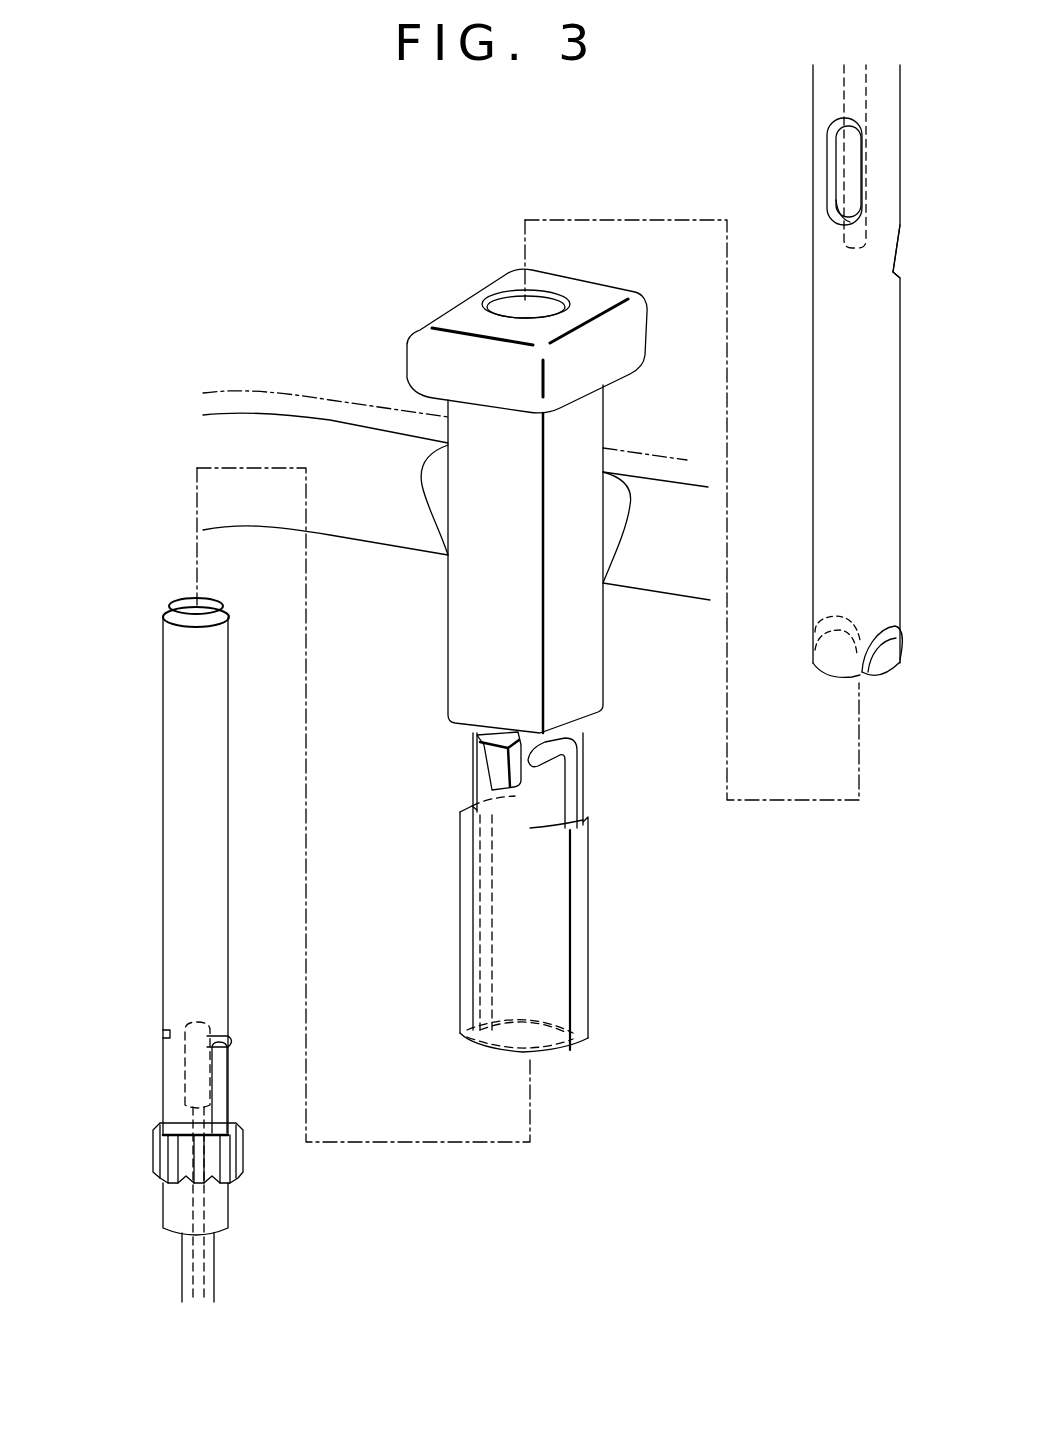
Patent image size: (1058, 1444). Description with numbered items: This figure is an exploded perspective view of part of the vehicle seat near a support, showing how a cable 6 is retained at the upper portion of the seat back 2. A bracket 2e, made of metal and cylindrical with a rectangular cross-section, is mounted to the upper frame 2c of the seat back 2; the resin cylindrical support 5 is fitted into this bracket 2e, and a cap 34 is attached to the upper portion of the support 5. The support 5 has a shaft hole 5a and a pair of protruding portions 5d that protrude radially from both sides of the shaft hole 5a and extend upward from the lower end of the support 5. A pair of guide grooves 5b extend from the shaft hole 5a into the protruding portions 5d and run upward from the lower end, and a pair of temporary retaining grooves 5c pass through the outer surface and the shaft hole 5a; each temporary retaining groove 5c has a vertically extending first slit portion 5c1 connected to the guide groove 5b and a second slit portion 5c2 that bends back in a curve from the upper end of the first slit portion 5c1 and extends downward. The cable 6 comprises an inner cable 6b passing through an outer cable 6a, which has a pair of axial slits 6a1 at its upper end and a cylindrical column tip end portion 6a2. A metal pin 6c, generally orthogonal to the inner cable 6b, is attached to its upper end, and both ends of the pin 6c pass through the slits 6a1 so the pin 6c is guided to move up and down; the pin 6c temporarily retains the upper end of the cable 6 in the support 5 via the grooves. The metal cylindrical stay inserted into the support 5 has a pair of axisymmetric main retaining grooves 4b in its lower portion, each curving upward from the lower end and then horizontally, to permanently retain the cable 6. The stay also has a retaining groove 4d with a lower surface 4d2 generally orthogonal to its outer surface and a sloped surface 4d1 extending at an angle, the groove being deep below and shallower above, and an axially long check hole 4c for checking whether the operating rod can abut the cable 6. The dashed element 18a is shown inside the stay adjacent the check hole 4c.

The seat back 2 is at (264, 376).
The upper frame 2c is at (667, 580).
The bracket 2e is at (588, 693).
The cap 34 is at (627, 328).
The support 5 is at (515, 927).
The shaft hole 5a is at (546, 1037).
The guide groove 5b is at (472, 970).
The temporary retaining groove 5c is at (590, 778).
The first slit portion 5c1 is at (573, 789).
The second slit portion 5c2 is at (560, 739).
The protruding portion 5d is at (460, 907).
The cable 6 is at (216, 922).
The outer cable 6a is at (176, 1207).
The slit 6a1 is at (218, 1113).
The cylindrical column tip end portion 6a2 is at (183, 605).
The inner cable 6b is at (197, 1268).
The pin 6c is at (232, 1043).
The cable 18a is at (850, 90).
The main retaining groove 4b is at (835, 612).
The check hole 4c is at (830, 146).
The retaining groove 4d is at (880, 258).
The sloped surface 4d1 is at (850, 222).
The lower surface 4d2 is at (892, 273).